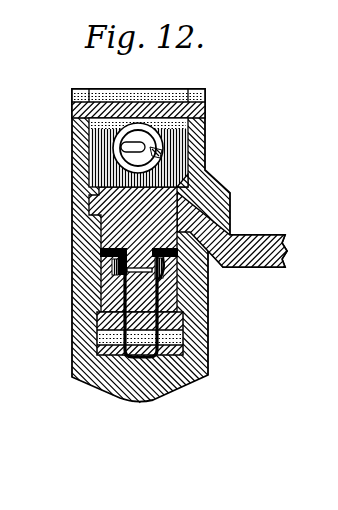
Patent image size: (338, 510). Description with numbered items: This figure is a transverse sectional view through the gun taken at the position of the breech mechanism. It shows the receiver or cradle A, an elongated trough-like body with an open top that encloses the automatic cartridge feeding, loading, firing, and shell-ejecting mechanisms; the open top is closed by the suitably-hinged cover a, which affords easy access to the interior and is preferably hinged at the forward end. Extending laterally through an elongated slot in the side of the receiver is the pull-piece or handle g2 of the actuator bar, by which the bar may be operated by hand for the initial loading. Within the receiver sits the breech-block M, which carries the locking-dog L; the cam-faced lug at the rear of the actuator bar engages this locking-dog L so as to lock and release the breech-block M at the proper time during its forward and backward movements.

The receiver or cradle A is at (203, 148).
The cover a is at (110, 107).
The pull-piece or handle g2 is at (270, 236).
The locking-dog L is at (138, 297).
The breech-block M is at (173, 320).